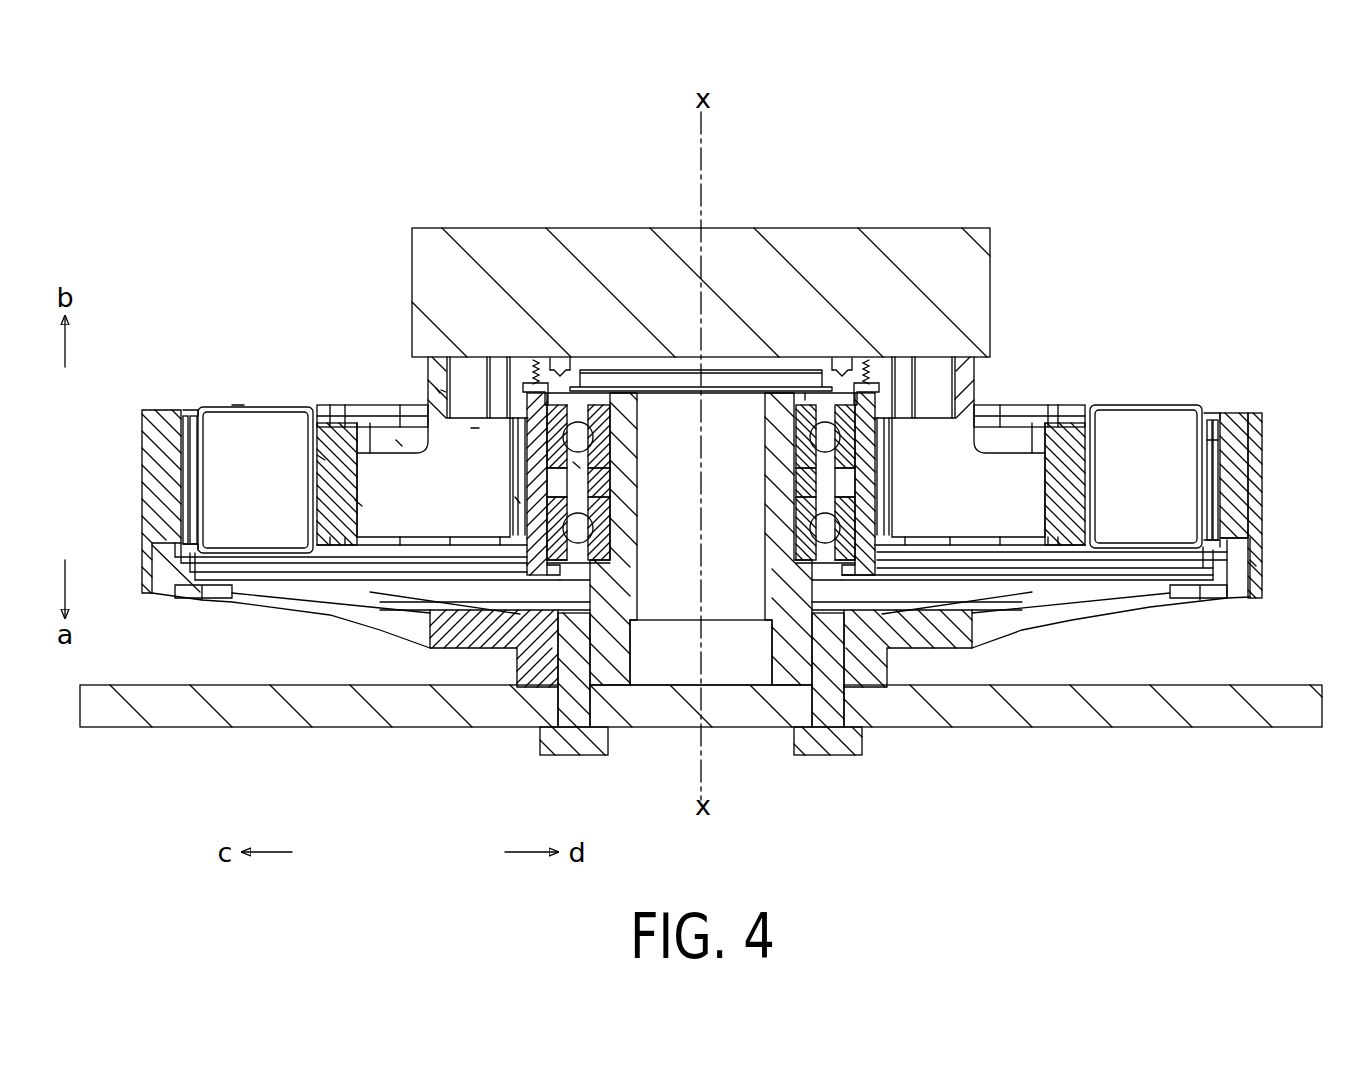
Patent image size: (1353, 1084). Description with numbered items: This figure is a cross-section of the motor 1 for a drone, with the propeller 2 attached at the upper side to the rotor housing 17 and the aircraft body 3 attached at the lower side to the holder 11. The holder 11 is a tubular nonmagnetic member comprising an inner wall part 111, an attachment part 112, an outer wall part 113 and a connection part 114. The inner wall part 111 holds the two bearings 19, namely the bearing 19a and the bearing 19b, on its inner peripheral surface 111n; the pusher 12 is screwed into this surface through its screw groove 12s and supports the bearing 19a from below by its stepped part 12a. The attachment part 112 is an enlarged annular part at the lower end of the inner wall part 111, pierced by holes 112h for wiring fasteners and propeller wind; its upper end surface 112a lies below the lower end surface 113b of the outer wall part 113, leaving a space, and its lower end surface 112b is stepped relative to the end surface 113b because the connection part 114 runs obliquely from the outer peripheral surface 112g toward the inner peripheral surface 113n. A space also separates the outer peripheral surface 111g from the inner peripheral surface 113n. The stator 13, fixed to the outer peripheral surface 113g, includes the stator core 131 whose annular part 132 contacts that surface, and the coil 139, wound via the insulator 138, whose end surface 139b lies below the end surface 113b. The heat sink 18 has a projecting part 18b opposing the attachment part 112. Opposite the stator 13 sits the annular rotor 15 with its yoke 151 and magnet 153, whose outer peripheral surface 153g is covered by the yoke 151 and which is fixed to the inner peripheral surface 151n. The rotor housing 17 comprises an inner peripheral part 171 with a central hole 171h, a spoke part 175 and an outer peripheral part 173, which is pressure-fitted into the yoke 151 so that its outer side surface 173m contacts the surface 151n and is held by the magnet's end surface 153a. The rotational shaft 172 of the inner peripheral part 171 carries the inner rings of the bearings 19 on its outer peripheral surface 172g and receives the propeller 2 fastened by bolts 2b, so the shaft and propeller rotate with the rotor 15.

The motor 1 is at (1216, 66).
The propeller 2 is at (177, 712).
The bolt 2b is at (572, 740).
The aircraft body 3 is at (872, 266).
The holder 11 is at (537, 568).
The pusher 12 is at (642, 367).
The stepped part 12a is at (862, 388).
The screw groove 12s is at (860, 370).
The stator 13 is at (222, 487).
The rotor 15 is at (1318, 313).
The rotor housing 17 is at (1112, 620).
The heat sink 18 is at (460, 506).
The projecting part 18b is at (538, 395).
The bearings 19 is at (1063, 318).
The bearing 19a is at (840, 412).
The bearing 19b is at (845, 500).
The inner wall part 111 is at (540, 483).
The outer peripheral surface 111g is at (517, 500).
The inner peripheral surface 111n is at (575, 466).
The attachment part 112 is at (475, 368).
The end surface 112a is at (399, 443).
The end surface 112b is at (444, 391).
The outer peripheral surface 112g is at (440, 392).
The hole 112h is at (475, 428).
The outer wall part 113 is at (345, 455).
The end surface 113b is at (355, 435).
The outer peripheral surface 113g is at (322, 455).
The inner peripheral surface 113n is at (358, 505).
The connection part 114 is at (390, 430).
The stator core 131 is at (181, 408).
The annular part 132 is at (355, 502).
The insulator 138 is at (330, 522).
The coil 139 is at (240, 437).
The end surface 139b is at (238, 405).
The yoke 151 is at (1257, 433).
The inner peripheral surface 151n is at (1218, 440).
The magnet 153 is at (1233, 440).
The end surface 153a is at (1237, 546).
The outer peripheral surface 153g is at (1257, 490).
The inner peripheral part 171 is at (927, 635).
The hole 171h is at (723, 658).
The rotational shaft 172 is at (612, 652).
The outer peripheral surface 172g is at (812, 395).
The outer peripheral part 173 is at (1213, 586).
The outer side surface 173m is at (1253, 563).
The spoke part 175 is at (1060, 612).